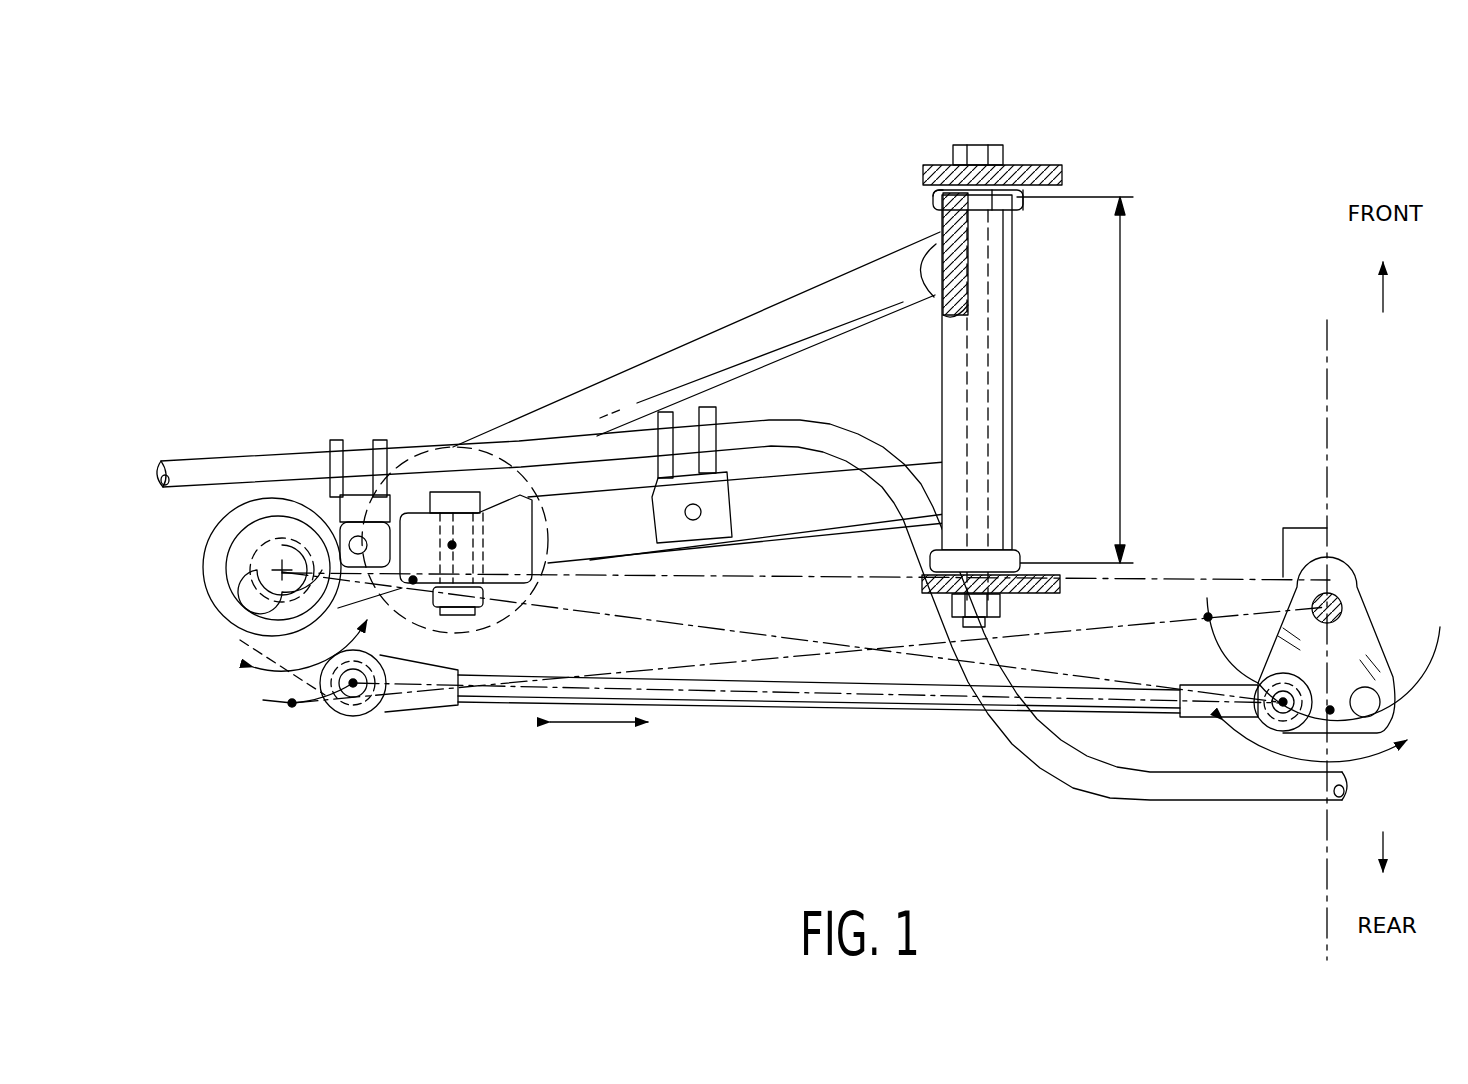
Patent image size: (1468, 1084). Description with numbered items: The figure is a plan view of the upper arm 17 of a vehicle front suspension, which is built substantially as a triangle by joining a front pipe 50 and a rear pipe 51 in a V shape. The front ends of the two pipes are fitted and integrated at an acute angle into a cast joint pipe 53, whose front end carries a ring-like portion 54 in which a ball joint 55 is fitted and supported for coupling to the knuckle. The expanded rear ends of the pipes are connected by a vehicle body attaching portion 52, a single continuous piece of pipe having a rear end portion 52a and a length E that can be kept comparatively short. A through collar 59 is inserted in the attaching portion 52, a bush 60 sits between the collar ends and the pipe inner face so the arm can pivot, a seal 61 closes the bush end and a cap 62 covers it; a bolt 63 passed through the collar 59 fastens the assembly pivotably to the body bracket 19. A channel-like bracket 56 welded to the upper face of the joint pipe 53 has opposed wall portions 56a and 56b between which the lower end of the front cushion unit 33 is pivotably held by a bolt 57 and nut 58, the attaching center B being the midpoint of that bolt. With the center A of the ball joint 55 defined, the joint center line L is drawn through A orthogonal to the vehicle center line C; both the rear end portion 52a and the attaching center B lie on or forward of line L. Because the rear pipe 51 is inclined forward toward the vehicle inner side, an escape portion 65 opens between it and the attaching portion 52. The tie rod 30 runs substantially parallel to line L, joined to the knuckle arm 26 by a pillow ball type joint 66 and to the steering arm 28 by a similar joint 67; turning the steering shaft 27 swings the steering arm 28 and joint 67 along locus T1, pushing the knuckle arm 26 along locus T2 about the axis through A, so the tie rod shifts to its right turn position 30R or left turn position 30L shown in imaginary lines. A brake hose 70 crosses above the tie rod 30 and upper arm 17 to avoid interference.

The upper arm 17 is at (582, 334).
The bracket 19 is at (1055, 183).
The knuckle arm 26 is at (257, 647).
The steering shaft 27 is at (1337, 600).
The steering arm 28 is at (1295, 627).
The tie rod 30 is at (816, 750).
The right turn position of the tie rod 30R is at (727, 663).
The left turn position of the tie rod 30L is at (807, 638).
The front cushion unit 33 is at (500, 460).
The front pipe 50 is at (660, 360).
The rear pipe 51 is at (627, 562).
The vehicle body attaching portion 52 is at (1008, 322).
The rear end portion of the vehicle body attaching portion 52a is at (980, 562).
The joint pipe 53 is at (510, 580).
The ring-like portion 54 is at (232, 590).
The ball joint 55 is at (277, 547).
The bracket 56 is at (475, 505).
The wall portion 56a is at (413, 507).
The wall portion 56b is at (413, 584).
The bolt 57 is at (437, 460).
The nut 58 is at (473, 600).
The through collar 59 is at (970, 225).
The bush 60 is at (950, 258).
The seal 61 is at (940, 212).
The cap 62 is at (945, 197).
The bolt 63 is at (985, 145).
The escape portion 65 is at (822, 552).
The pillow ball type joint 66 is at (350, 700).
The joint 67 is at (1283, 712).
The brake hose 70 is at (1112, 796).
The center A is at (280, 570).
The attaching center B is at (452, 545).
The vehicle center line C is at (1327, 360).
The length E is at (1083, 380).
The joint center line L is at (848, 579).
The locus T1 is at (1215, 652).
The locus T2 is at (287, 706).